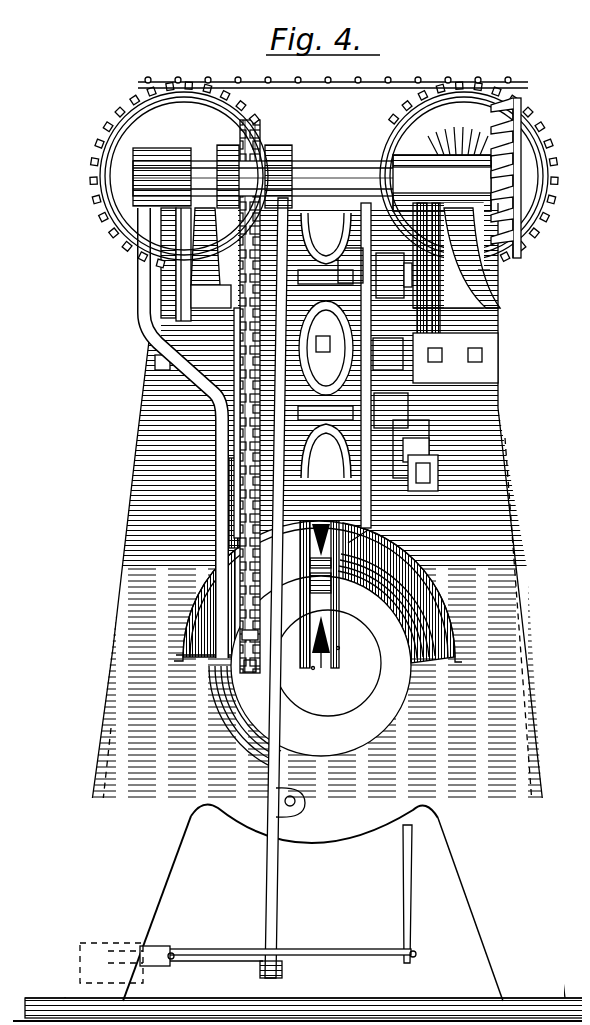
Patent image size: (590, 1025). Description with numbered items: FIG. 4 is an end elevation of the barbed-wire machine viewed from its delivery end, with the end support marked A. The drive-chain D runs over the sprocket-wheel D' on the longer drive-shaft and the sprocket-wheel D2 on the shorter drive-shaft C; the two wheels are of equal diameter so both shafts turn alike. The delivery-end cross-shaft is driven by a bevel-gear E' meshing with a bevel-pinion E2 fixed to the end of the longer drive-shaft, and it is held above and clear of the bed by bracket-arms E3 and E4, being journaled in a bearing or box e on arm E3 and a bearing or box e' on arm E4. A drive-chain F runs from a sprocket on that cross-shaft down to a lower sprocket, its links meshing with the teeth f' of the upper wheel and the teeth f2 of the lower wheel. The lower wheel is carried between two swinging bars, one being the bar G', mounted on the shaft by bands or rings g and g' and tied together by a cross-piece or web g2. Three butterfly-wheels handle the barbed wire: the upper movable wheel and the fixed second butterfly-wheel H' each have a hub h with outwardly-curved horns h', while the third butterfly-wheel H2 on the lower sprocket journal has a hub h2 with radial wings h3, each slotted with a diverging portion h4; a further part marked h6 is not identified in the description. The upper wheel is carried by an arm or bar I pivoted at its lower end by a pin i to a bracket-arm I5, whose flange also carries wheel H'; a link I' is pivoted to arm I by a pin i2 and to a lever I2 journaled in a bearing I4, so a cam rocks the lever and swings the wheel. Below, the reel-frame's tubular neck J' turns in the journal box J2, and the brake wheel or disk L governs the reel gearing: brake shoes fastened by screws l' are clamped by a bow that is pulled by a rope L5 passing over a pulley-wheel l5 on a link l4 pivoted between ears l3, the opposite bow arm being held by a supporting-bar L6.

The frame A is at (545, 757).
The drive-chain D is at (333, 72).
The sprocket-wheel D2 is at (157, 175).
The sprocket-wheel D' is at (481, 171).
The journal bearing or box e is at (442, 183).
The journal bearing or box e' is at (166, 157).
The bevel-gear E' is at (428, 178).
The bevel-pinion E2 is at (445, 132).
The bracket-arm E3 is at (462, 300).
The bracket-arm E4 is at (160, 240).
The drive-chain F is at (312, 166).
The teeth f' is at (259, 384).
The teeth f2 is at (238, 670).
The band or ring g is at (295, 171).
The band or ring g' is at (180, 176).
The cross-piece or web g2 is at (222, 480).
The swinging or oscillating bar G' is at (194, 588).
The center or hub h is at (205, 423).
The outwardly-curved horns or arms h' is at (335, 400).
The center or hub h2 is at (369, 569).
The radial wings h3 is at (356, 633).
The diverging portion h4 is at (356, 589).
The pivot h6 is at (331, 683).
The second butterfly-wheel H' is at (376, 322).
The third butterfly-wheel H2 is at (391, 537).
The pin or pivot i is at (410, 447).
The pin or pivot i2 is at (418, 363).
The arm or bar I is at (465, 365).
The link or arm I' is at (445, 365).
The lever or bar I2 is at (237, 627).
The bearing or box I4 is at (482, 262).
The bracket-arm I5 is at (415, 478).
The tubular neck or journal J' is at (318, 617).
The journal box or bearing J2 is at (310, 672).
The drive-shaft C is at (267, 520).
The screws l' is at (418, 894).
The ears l3 is at (63, 920).
The link l4 is at (146, 940).
The pulley-wheel l5 is at (165, 944).
The rope L5 is at (276, 959).
The supporting-bar L6 is at (589, 521).
The controlling or brake wheel or disk L is at (565, 414).